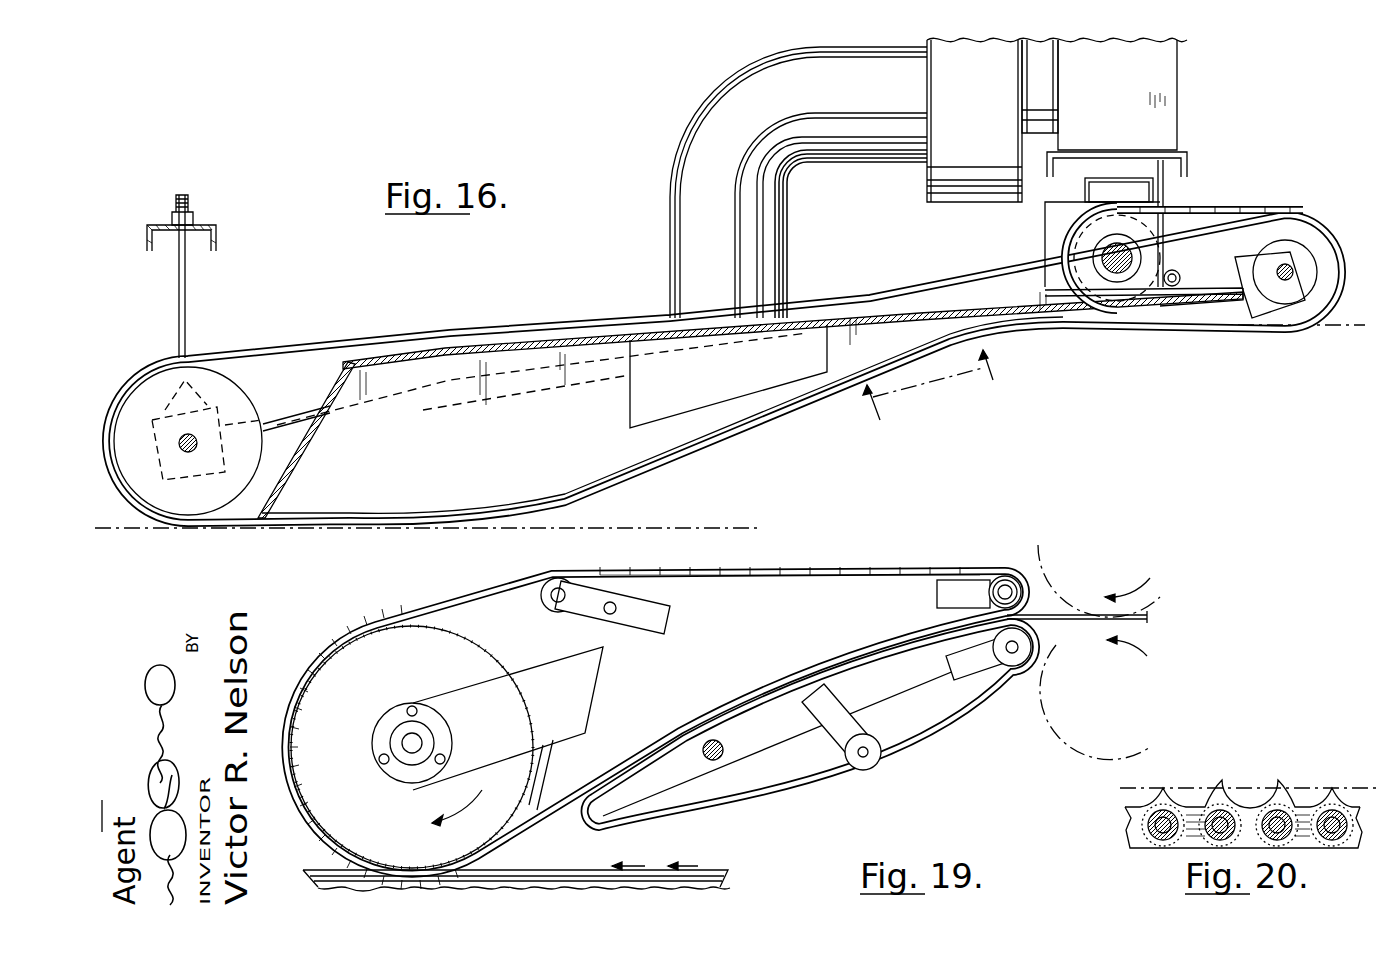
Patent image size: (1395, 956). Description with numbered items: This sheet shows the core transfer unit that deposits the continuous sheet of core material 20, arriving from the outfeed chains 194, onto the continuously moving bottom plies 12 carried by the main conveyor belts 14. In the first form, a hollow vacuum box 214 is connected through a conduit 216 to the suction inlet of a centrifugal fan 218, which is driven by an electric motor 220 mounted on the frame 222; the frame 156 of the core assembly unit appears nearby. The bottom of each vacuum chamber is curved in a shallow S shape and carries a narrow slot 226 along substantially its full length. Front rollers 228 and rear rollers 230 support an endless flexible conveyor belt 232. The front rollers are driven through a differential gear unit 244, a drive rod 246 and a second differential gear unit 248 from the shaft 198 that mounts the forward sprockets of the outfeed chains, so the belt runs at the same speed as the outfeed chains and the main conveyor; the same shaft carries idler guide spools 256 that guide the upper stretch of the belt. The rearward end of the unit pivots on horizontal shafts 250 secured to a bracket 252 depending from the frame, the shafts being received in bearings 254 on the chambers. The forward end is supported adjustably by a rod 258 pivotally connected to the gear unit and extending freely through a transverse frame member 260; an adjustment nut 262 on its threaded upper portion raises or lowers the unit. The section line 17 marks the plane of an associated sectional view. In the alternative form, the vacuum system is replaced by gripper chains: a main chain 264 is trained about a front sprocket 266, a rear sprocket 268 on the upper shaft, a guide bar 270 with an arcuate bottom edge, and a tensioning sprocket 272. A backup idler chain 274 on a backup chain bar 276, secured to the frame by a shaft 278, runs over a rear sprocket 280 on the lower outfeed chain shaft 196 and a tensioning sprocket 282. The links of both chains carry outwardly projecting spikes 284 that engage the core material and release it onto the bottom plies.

In FIG. 19, the bottom plies 12 is at (578, 876).
In FIG. 19, the main conveyor belts 14 is at (577, 888).
In FIG. 16, the section line 17- 17 is at (938, 397).
In FIG. 19, the core material 20 is at (1152, 617).
In FIG. 16, the frame 156 is at (1138, 180).
In FIG. 16, the outfeed chains 194 is at (1233, 206).
In FIG. 19, the lower outfeed chain shaft 196 is at (1022, 655).
In FIG. 16, the shaft 198 is at (1105, 257).
In FIG. 19, the shaft 198 is at (996, 588).
In FIG. 16, the vacuum box 214 is at (630, 403).
In FIG. 16, the conduit 216 is at (830, 150).
In FIG. 16, the centrifugal fan 218 is at (940, 192).
In FIG. 16, the electric motor 220 is at (1157, 80).
In FIG. 16, the frame 222 is at (1188, 152).
In FIG. 16, the slot 226 is at (608, 478).
In FIG. 16, the front rollers 228 is at (240, 390).
In FIG. 16, the rear rollers 230 is at (1288, 305).
In FIG. 16, the conveyor belt 232 is at (330, 346).
In FIG. 16, the differential gear unit 244 is at (207, 441).
In FIG. 16, the drive rod 246 is at (292, 418).
In FIG. 16, the differential gear unit 248 is at (1070, 220).
In FIG. 16, the horizontal shafts 250 is at (1170, 297).
In FIG. 16, the bracket 252 is at (1165, 229).
In FIG. 16, the bearings 254 is at (1180, 278).
In FIG. 16, the idler guide spools 256 is at (1083, 262).
In FIG. 16, the rod 258 is at (186, 298).
In FIG. 16, the transverse frame member 260 is at (216, 233).
In FIG. 16, the adjustment nut 262 is at (192, 212).
In FIG. 19, the main chain 264 is at (470, 608).
In FIG. 19, the front sprocket 266 is at (466, 632).
In FIG. 19, the rear sprocket 268 is at (1010, 568).
In FIG. 19, the guide bar 270 is at (818, 580).
In FIG. 19, the tensioning sprocket 272 is at (566, 612).
In FIG. 19, the backup idler chain 274 is at (722, 802).
In FIG. 19, the backup chain bar 276 is at (760, 750).
In FIG. 19, the shaft 278 is at (722, 752).
In FIG. 19, the rear sprocket 280 is at (1000, 675).
In FIG. 19, the tensioning sprocket 282 is at (880, 748).
In FIG. 20, the spikes 284 is at (1270, 786).